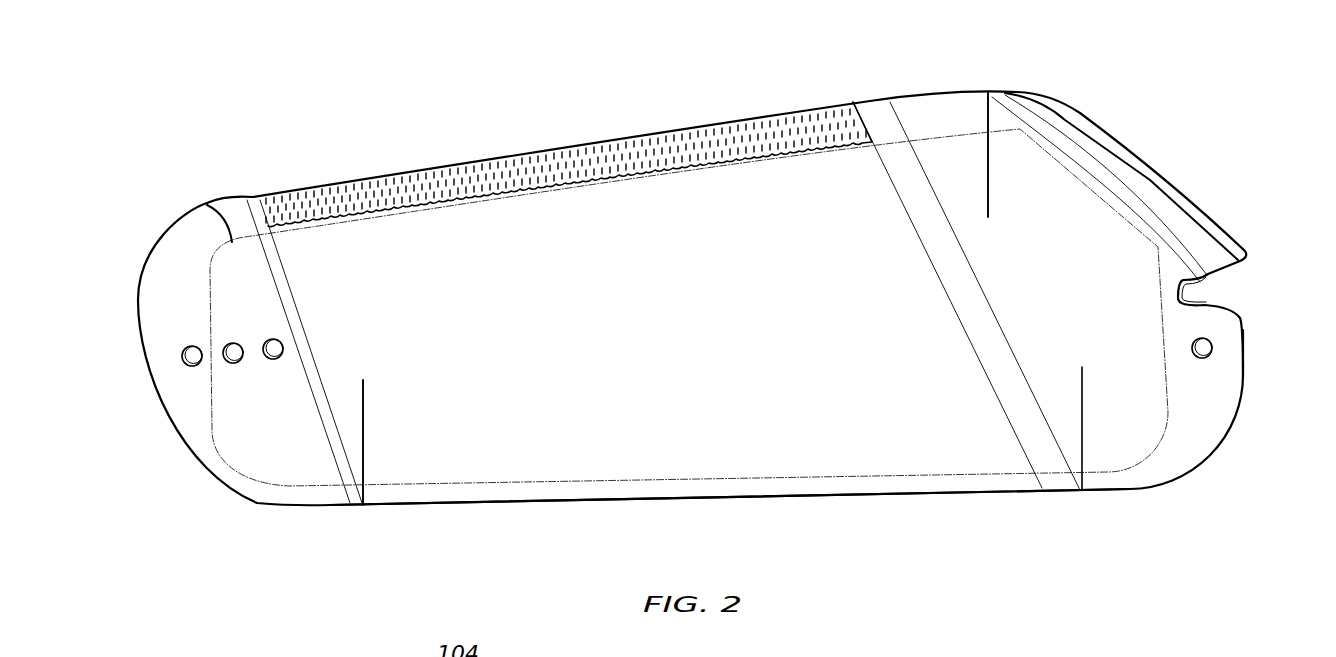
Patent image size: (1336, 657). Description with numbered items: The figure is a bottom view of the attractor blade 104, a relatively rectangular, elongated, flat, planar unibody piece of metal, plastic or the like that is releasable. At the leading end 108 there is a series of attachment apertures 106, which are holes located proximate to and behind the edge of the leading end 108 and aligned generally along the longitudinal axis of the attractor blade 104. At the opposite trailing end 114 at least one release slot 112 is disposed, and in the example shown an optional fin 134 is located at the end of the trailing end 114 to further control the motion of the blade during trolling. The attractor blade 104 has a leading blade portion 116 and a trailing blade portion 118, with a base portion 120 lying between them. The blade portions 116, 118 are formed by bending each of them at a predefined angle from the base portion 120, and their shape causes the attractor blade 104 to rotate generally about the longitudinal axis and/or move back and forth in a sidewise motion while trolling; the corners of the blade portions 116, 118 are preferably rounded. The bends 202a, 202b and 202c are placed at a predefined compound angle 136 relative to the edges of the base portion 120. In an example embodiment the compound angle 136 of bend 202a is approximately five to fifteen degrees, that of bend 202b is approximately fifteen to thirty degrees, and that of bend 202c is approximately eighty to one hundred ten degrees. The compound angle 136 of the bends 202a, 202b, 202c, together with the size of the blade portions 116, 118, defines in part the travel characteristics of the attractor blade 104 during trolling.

The attractor blade 104 is at (392, 130).
The attachment apertures 106 is at (270, 338).
The leading end 108 is at (163, 402).
The release slot 112 is at (1258, 275).
The trailing end 114 is at (1243, 352).
The leading blade portion 116 is at (207, 205).
The trailing blade portion 118 is at (1105, 243).
The base portion 120 is at (552, 462).
The fin 134 is at (1215, 220).
The compound angle 136 is at (307, 438).
The bend 202a is at (361, 515).
The bend 202b is at (855, 93).
The bend 202c is at (992, 74).